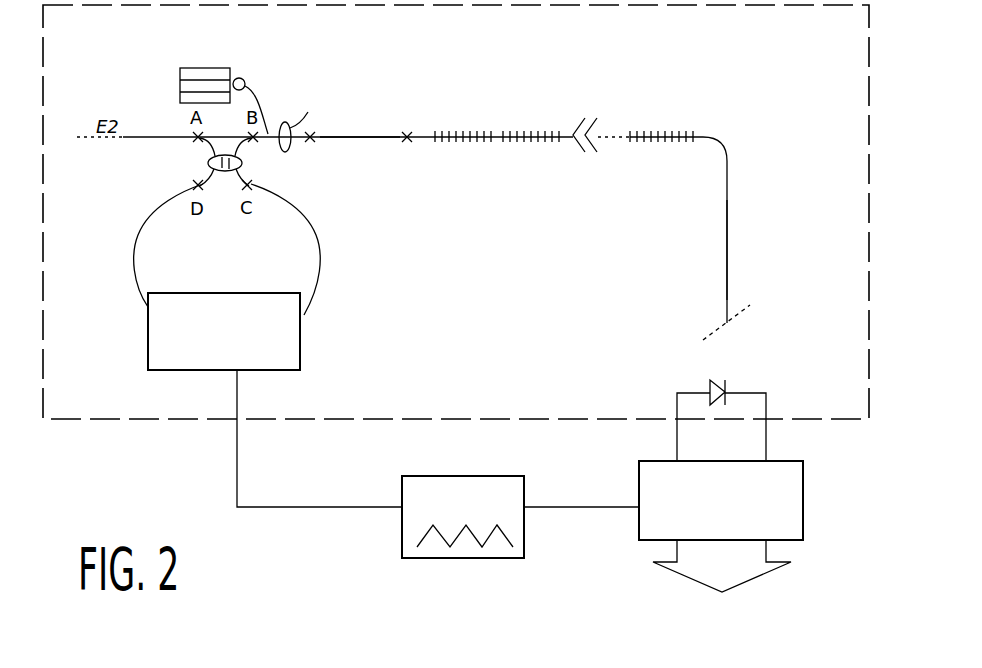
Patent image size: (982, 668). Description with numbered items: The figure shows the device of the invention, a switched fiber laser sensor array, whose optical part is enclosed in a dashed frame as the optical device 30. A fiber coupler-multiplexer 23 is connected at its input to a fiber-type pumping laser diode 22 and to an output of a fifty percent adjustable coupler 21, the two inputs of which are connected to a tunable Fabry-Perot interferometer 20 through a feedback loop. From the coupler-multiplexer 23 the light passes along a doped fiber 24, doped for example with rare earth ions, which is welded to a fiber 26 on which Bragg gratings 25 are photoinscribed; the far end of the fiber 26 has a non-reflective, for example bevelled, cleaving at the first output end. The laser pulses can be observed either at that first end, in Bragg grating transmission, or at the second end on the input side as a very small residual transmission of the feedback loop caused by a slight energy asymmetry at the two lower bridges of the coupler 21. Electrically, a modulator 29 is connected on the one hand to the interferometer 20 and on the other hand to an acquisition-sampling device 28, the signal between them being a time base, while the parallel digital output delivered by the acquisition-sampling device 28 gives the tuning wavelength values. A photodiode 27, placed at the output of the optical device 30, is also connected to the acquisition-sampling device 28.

The tunable Fabry-Perot interferometer 20 is at (300, 330).
The 50% adjustable coupler 21 is at (208, 165).
The pumping laser diode 22 is at (185, 68).
The fiber coupler-multiplexer 23 is at (283, 121).
The doped fiber 24 is at (366, 139).
The Bragg gratings 25 is at (712, 80).
The fiber 26 is at (727, 221).
The photodiode 27 is at (716, 381).
The acquisition-sampling device 28 is at (653, 468).
The modulator 29 is at (420, 481).
The optical device 30 is at (176, 420).